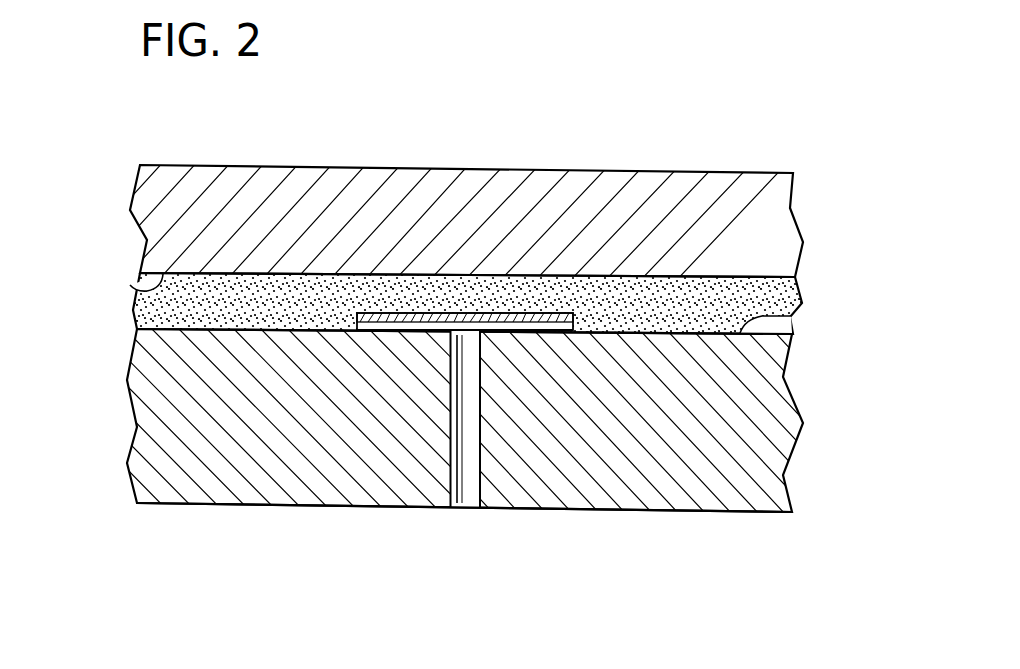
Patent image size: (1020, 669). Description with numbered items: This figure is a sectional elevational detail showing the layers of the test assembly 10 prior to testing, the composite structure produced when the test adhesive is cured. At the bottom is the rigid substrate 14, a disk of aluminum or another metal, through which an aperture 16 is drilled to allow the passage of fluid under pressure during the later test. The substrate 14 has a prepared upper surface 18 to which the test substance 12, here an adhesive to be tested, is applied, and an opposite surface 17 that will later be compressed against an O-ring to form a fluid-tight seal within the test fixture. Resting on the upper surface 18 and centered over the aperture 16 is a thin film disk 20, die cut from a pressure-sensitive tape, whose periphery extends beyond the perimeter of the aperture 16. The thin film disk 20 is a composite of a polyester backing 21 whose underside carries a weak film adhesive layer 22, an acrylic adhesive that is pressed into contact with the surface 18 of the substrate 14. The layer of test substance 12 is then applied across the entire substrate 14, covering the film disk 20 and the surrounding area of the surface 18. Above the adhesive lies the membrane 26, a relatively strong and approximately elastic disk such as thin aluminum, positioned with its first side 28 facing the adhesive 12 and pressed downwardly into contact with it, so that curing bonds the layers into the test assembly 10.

The test assembly 10 is at (646, 115).
The test substance 12 is at (122, 313).
The rigid substrate 14 is at (812, 391).
The aperture 16 is at (478, 482).
The surface of the substrate 17 is at (667, 513).
The upper surface of the substrate 18 is at (791, 316).
The thin film disk 20 is at (502, 317).
The polyester backing 21 is at (556, 313).
The weak film adhesive layer 22 is at (544, 330).
The membrane 26 is at (718, 170).
The first side of the membrane 28 is at (130, 285).